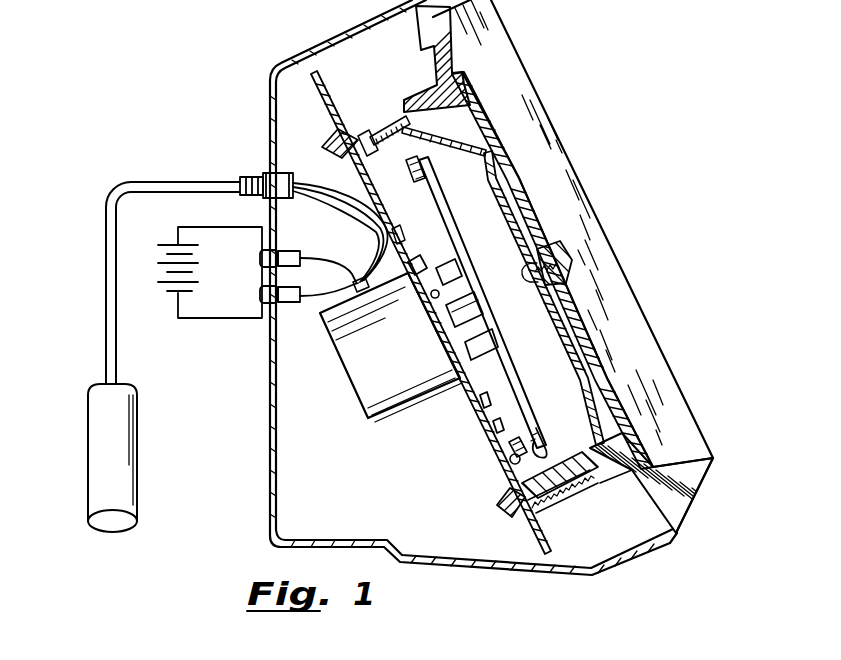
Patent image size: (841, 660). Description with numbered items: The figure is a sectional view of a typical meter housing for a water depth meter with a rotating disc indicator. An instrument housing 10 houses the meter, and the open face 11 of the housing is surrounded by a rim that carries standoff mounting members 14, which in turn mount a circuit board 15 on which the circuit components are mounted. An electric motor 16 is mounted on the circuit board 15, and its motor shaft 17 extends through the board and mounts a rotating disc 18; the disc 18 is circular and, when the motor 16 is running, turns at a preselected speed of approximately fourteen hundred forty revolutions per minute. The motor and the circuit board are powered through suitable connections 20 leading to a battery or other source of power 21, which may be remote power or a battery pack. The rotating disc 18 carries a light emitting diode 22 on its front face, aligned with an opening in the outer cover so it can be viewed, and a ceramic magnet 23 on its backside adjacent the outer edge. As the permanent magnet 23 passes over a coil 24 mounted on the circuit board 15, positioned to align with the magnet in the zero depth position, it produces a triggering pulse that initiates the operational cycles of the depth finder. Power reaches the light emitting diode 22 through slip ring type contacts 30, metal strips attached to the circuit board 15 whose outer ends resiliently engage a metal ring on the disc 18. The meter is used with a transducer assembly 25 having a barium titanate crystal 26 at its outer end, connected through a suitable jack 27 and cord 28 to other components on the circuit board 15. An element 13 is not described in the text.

The instrument housing 10 is at (270, 485).
The open face 11 is at (561, 194).
The plate 13 is at (567, 338).
The standoff mounting members 14 is at (368, 123).
The circuit board 15 is at (502, 450).
The electric motor 16 is at (360, 380).
The motor shaft 17 is at (447, 312).
The rotating disc 18 is at (452, 236).
The connections 20 is at (258, 296).
The battery or other source of power 21 is at (204, 261).
The light emitting diode 22 is at (427, 165).
The ceramic magnet 23 is at (560, 453).
The coil 24 is at (500, 457).
The transducer assembly 25 is at (125, 455).
The barium titanate crystal 26 is at (105, 527).
The jack 27 is at (247, 178).
The cord 28 is at (150, 182).
The slip ring type contacts 30 is at (432, 268).